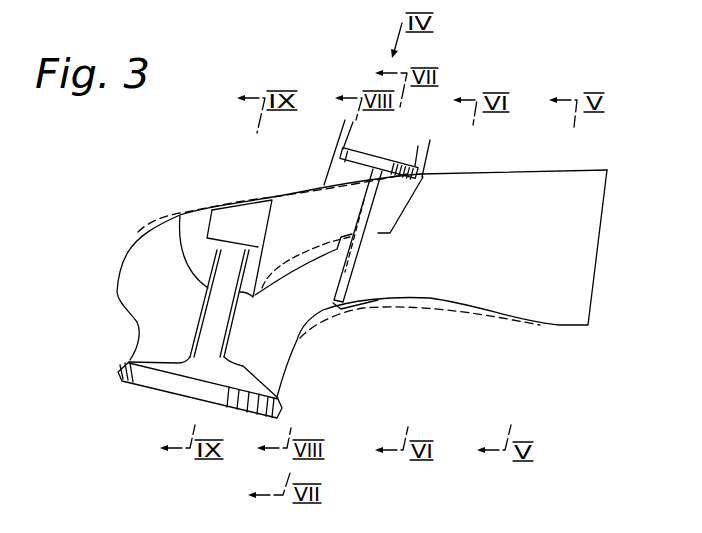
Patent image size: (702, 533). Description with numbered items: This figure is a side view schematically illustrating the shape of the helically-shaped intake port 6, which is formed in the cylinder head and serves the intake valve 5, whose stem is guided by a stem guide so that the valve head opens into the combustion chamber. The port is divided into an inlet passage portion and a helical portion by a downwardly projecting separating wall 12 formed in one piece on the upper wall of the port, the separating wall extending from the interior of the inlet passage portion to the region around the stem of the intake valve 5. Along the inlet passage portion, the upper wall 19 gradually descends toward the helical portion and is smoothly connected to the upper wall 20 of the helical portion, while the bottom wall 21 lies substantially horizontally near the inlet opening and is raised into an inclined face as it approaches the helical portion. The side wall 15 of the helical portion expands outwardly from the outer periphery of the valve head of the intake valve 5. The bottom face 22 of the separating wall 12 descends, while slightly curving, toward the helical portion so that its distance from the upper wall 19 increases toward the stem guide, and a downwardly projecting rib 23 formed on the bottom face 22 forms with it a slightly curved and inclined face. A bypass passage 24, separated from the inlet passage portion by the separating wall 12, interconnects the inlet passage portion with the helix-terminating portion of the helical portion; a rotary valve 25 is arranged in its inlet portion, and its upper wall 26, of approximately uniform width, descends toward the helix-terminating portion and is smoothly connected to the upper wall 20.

The intake valve 5 is at (157, 386).
The helically-shaped intake port 6 is at (518, 236).
The separating wall 12 is at (293, 208).
The side wall of the helical portion 15 is at (128, 253).
The upper wall of the inlet passage portion 19 is at (492, 178).
The upper wall of the helical portion 20 is at (155, 228).
The bottom wall of the inlet passage portion 21 is at (472, 306).
The bottom face of the separating wall 22 is at (379, 234).
The rib 23 is at (289, 274).
The bypass passage 24 is at (327, 209).
The rotary valve 25 is at (366, 265).
The upper wall of the bypass passage 26 is at (270, 210).